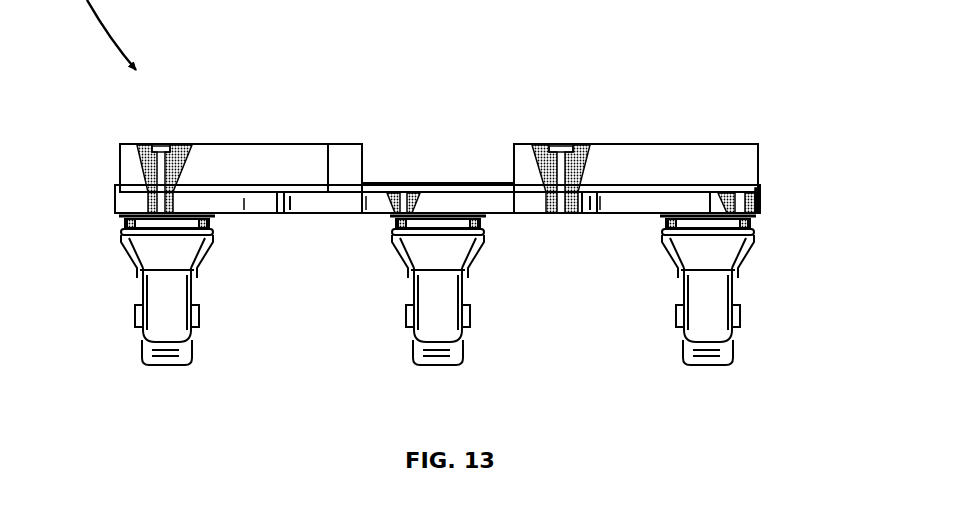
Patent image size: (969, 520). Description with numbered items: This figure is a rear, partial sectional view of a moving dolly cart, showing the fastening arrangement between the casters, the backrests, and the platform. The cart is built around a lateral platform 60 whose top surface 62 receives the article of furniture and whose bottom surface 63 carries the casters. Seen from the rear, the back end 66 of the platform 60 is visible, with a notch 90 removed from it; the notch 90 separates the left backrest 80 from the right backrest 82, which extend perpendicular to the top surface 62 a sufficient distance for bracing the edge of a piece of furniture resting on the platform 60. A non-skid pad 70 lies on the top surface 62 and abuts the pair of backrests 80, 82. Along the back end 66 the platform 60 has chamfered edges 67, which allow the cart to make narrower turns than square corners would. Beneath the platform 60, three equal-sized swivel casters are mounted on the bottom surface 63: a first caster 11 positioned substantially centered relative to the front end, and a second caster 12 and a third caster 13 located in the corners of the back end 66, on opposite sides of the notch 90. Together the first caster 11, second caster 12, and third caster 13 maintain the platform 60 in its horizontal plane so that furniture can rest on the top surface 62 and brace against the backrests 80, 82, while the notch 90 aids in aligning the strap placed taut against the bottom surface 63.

The first caster 11 is at (463, 282).
The second caster 12 is at (690, 283).
The third caster 13 is at (180, 342).
The lateral platform 60 is at (320, 220).
The top surface 62 is at (248, 176).
The bottom surface 63 is at (250, 222).
The back end 66 is at (627, 213).
The chamfered edges 67 is at (717, 198).
The non-skid pad 70 is at (437, 185).
The left backrest 80 is at (628, 170).
The right backrest 82 is at (218, 154).
The notch 90 is at (381, 199).